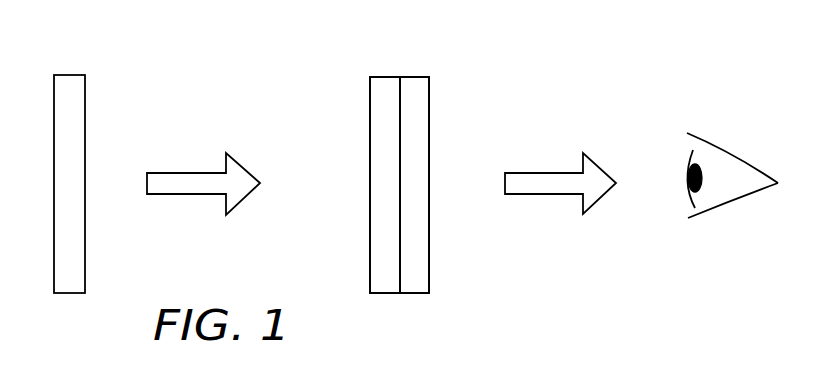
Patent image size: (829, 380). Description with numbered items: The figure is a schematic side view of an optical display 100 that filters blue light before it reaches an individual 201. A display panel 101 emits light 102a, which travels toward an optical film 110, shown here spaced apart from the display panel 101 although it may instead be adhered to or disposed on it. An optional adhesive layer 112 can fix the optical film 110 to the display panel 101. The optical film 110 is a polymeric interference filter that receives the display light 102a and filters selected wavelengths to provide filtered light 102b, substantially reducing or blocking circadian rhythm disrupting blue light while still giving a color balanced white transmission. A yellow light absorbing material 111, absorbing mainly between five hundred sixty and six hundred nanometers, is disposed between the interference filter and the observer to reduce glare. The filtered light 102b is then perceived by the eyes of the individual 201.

The optical display 100 is at (612, 23).
The display panel 101 is at (70, 88).
The light 102a is at (193, 173).
The optical film 110 is at (412, 85).
The yellow light absorbing material 111 is at (429, 263).
The adhesive layer 112 is at (382, 85).
The filtered light 102b is at (549, 173).
The individual 201 is at (728, 162).